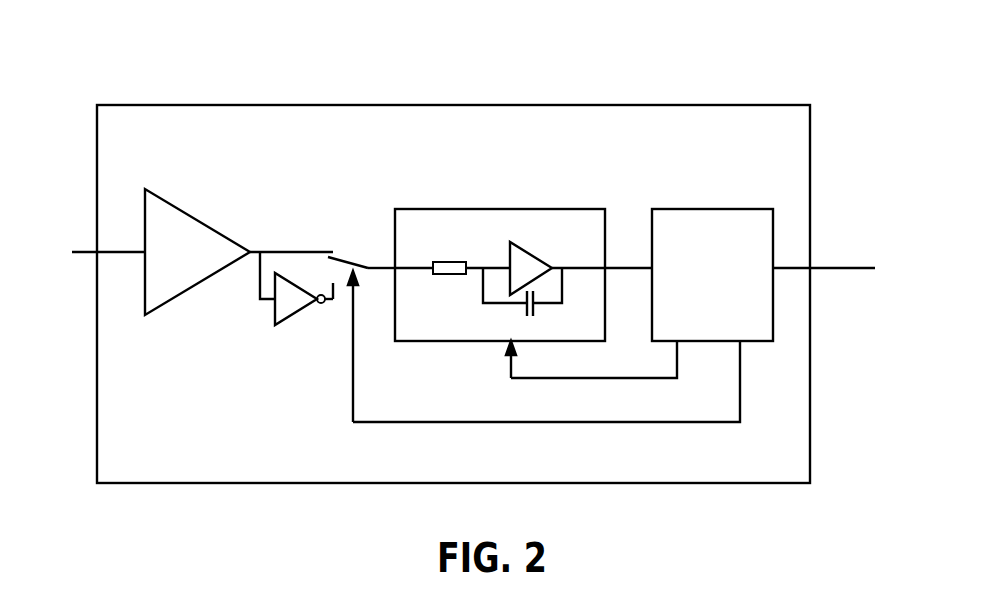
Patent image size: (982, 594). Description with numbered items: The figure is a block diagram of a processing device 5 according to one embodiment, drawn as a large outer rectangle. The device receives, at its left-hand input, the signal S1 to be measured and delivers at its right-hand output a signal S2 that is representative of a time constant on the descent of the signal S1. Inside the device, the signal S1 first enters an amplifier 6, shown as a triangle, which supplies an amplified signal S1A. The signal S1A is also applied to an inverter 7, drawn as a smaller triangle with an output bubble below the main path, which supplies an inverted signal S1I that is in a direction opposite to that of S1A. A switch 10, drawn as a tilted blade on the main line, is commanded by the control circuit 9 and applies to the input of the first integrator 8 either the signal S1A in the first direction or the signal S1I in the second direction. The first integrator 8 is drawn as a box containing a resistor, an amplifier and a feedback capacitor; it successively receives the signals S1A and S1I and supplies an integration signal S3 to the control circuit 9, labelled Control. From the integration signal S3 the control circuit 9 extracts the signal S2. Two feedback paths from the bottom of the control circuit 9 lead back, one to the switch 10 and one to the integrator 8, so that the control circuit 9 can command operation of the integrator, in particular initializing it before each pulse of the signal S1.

The processing device 5 is at (507, 106).
The amplifier 6 is at (188, 210).
The inverter 7 is at (290, 318).
The first integrator 8 is at (523, 209).
The control circuit 9 is at (718, 209).
The switch 10 is at (348, 262).
The signal to be measured S1 is at (79, 250).
The amplified signal S1A is at (305, 252).
The inverted signal S1I is at (332, 302).
The integration signal S3 is at (625, 267).
The output signal S2 is at (832, 268).